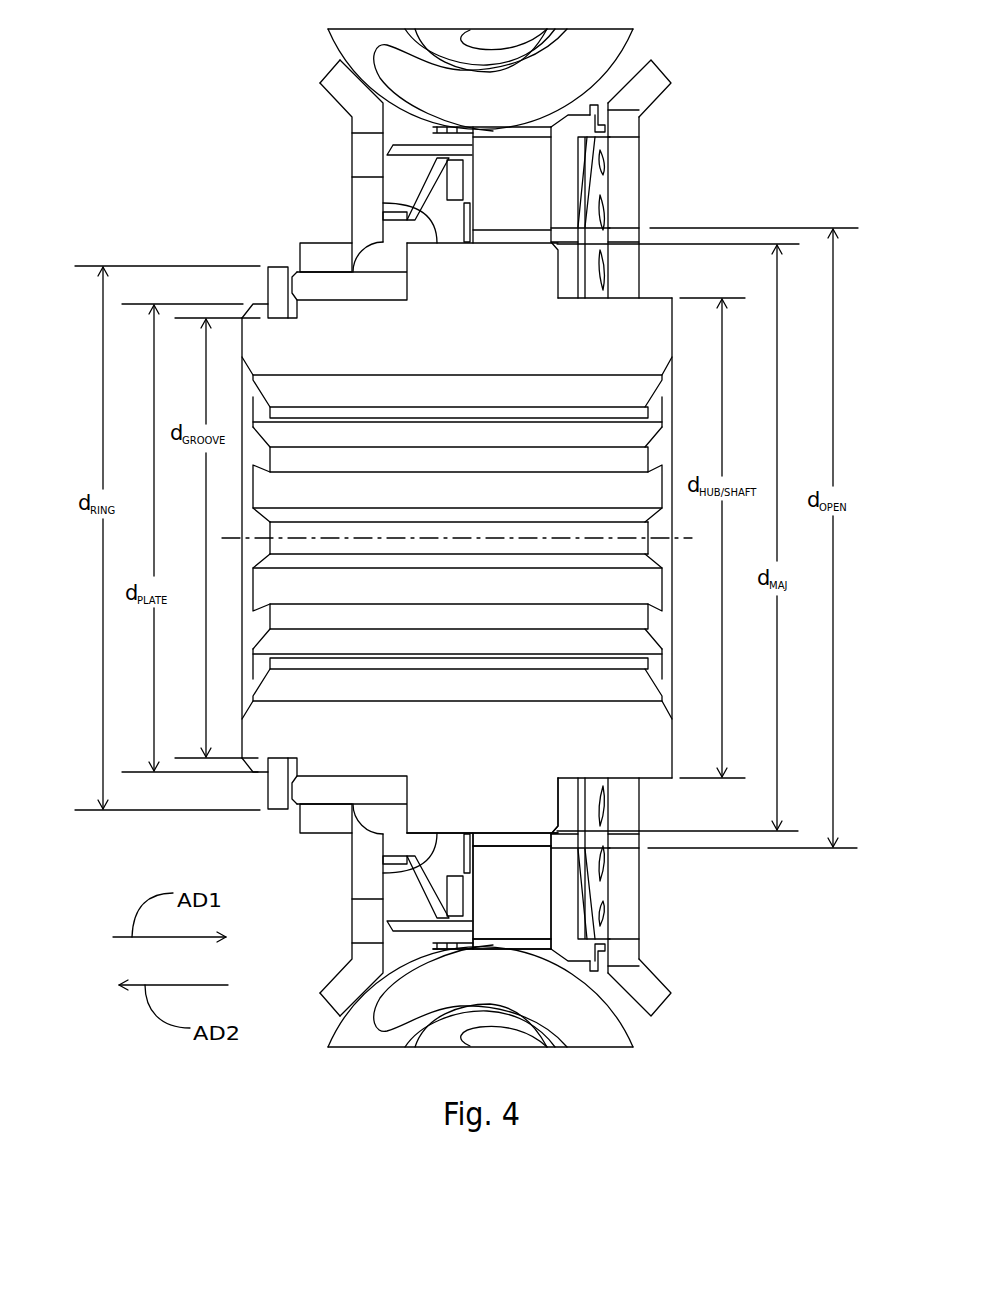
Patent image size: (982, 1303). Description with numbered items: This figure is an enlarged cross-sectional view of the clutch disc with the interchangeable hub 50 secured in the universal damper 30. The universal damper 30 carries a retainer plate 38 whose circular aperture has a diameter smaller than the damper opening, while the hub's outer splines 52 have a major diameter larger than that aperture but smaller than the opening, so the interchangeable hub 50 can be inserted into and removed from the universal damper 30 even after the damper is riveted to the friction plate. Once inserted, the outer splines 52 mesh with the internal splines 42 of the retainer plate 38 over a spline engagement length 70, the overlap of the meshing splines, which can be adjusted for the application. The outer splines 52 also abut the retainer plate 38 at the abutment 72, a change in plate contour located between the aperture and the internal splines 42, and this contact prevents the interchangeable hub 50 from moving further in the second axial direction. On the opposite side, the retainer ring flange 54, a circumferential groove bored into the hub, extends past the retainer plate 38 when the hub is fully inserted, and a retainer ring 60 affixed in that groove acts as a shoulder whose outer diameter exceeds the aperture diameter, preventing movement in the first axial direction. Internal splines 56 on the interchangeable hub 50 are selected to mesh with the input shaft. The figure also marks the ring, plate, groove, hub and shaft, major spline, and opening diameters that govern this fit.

The universal damper 30 is at (625, 167).
The retainer plate 38 is at (337, 793).
The internal splines 42 is at (437, 843).
The interchangeable hub 50 is at (658, 327).
The outer splines 52 is at (502, 812).
The retainer ring flange 54 is at (277, 766).
The internal splines 56 is at (583, 427).
The retainer ring 60 is at (279, 267).
The spline engagement length 70 is at (407, 200).
The abutment 72 is at (407, 264).